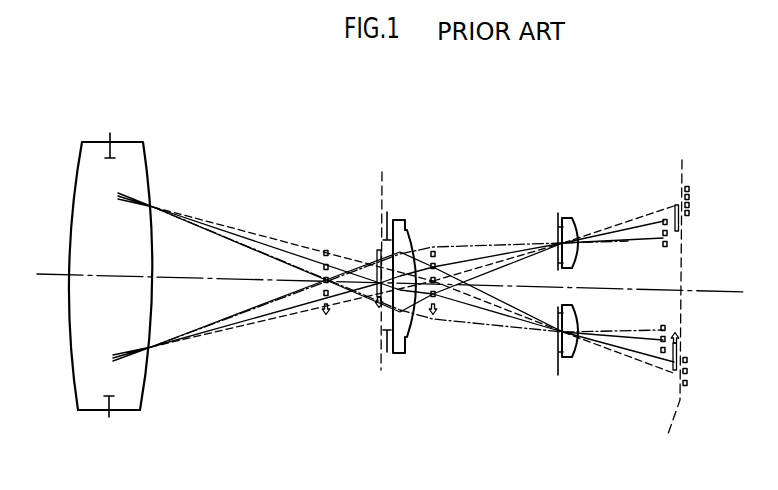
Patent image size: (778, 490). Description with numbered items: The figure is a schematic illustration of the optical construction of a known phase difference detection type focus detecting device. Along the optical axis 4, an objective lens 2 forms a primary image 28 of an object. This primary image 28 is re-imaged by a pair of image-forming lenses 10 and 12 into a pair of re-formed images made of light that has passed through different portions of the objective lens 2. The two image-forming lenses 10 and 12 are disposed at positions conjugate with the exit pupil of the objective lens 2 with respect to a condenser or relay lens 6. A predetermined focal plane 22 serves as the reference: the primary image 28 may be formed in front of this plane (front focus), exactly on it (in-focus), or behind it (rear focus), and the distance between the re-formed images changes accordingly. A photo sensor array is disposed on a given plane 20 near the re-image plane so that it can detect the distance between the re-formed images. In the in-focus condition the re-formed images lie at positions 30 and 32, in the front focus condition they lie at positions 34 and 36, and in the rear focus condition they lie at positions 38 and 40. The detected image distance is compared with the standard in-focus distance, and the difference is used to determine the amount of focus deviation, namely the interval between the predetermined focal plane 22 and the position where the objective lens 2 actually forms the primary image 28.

The objective lens 2 is at (90, 156).
The optical axis 4 is at (45, 273).
The condenser or relay lens 6 is at (402, 240).
The image-forming lens 10 is at (571, 216).
The image-forming lens 12 is at (572, 358).
The given plane 20 is at (669, 310).
The predetermined focal plane 22 is at (380, 186).
The primary image 28 is at (433, 318).
The re-formed image 30 is at (676, 205).
The re-formed image 32 is at (681, 328).
The re-formed image 34 is at (664, 248).
The re-formed image 36 is at (663, 325).
The re-formed image 38 is at (688, 183).
The re-formed image 40 is at (689, 360).